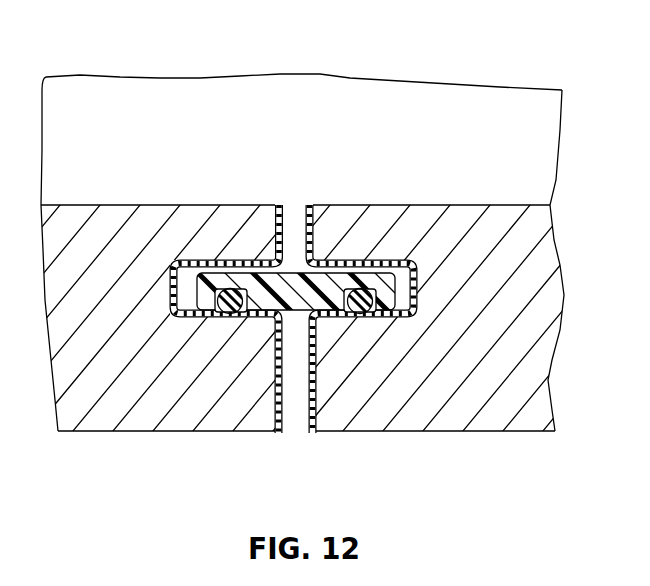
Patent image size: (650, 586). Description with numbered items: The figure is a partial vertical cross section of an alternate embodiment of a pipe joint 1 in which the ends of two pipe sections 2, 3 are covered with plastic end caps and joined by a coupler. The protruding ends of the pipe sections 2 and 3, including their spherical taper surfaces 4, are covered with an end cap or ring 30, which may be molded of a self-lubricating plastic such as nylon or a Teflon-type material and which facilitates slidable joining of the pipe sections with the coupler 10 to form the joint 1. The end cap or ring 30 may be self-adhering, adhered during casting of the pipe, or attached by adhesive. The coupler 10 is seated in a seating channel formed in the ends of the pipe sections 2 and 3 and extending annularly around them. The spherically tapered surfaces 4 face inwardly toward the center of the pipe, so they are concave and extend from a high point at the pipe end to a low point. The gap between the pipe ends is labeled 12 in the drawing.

The pipe joint 1 is at (450, 108).
The pipe section 2 is at (215, 222).
The pipe section 3 is at (483, 215).
The end cap or ring 30 is at (310, 207).
The coupler 10 is at (323, 282).
The spherical taper surface 4 is at (226, 320).
The slot 12 is at (284, 318).